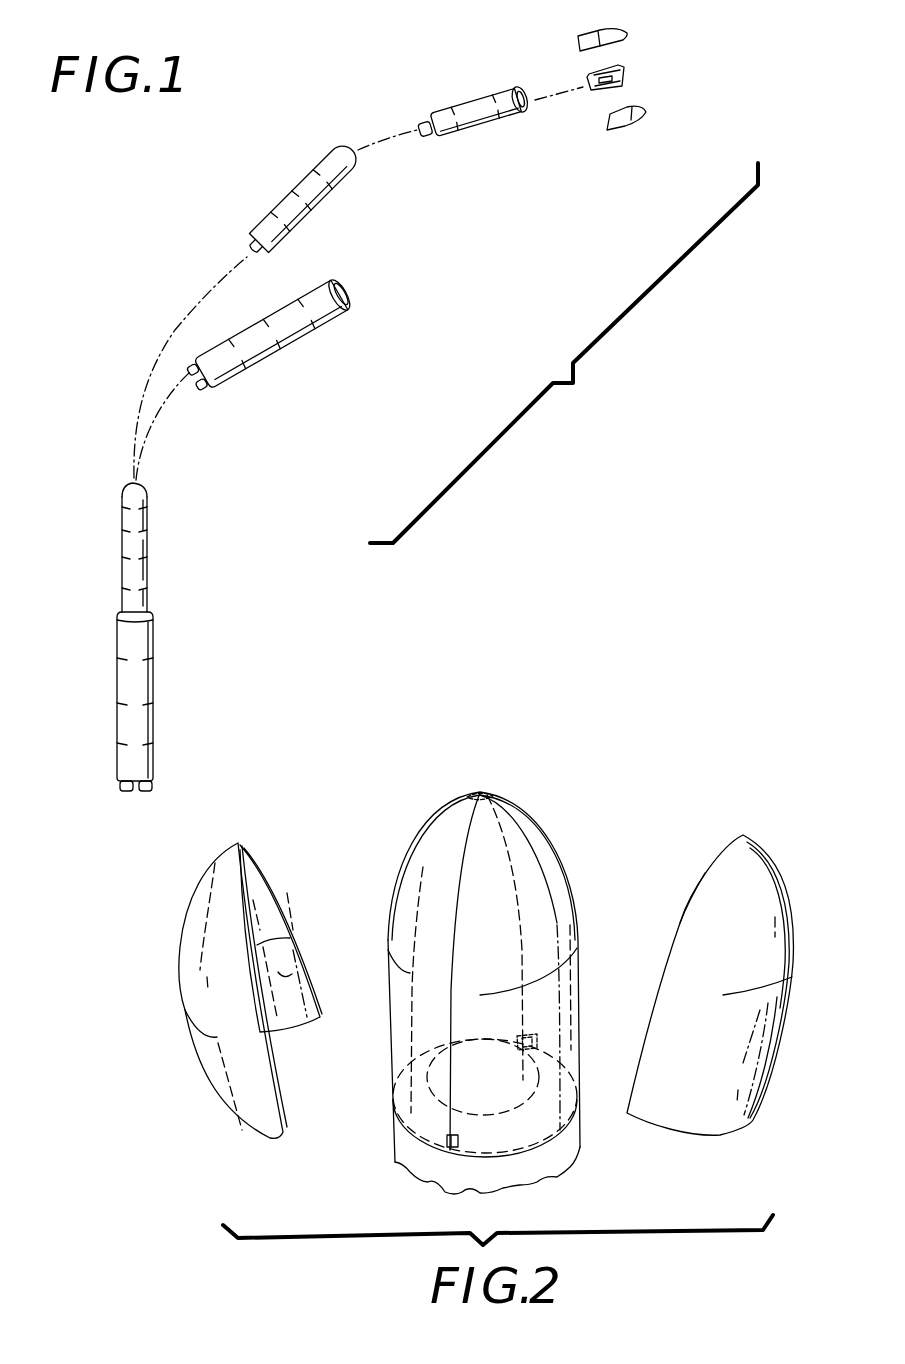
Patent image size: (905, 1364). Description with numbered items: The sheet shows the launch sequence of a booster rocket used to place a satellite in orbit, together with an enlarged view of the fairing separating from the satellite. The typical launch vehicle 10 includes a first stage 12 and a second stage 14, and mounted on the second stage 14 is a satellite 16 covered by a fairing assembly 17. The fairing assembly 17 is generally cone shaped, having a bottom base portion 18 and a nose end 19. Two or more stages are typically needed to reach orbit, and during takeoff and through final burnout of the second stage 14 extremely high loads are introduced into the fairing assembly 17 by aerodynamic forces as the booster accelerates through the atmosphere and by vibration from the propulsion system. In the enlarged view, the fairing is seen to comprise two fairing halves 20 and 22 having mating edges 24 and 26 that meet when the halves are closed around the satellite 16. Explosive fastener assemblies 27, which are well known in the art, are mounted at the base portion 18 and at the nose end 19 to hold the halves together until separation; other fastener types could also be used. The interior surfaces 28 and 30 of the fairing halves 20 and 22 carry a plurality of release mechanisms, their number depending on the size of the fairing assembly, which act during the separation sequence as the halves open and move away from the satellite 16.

In FIG. 1, the launch vehicle 10 is at (293, 521).
In FIG. 1, the first stage 12 is at (293, 340).
In FIG. 1, the second stage 14 is at (280, 200).
In FIG. 1, the satellite 16 is at (630, 72).
In FIG. 1, the fairing assembly 17 is at (347, 148).
In FIG. 2, the fairing assembly 17 is at (533, 797).
In FIG. 2, the bottom base portion 18 is at (415, 1140).
In FIG. 2, the nose end 19 is at (483, 790).
In FIG. 1, the fairing half 20 is at (627, 32).
In FIG. 2, the fairing half 20 is at (183, 910).
In FIG. 1, the fairing half 22 is at (640, 127).
In FIG. 2, the fairing half 22 is at (790, 890).
In FIG. 2, the mating edge 24 is at (277, 890).
In FIG. 2, the mating edge 26 is at (705, 873).
In FIG. 2, the explosive fastener assembly 27 is at (460, 790).
In FIG. 2, the interior surface 28 is at (280, 972).
In FIG. 2, the interior surface 30 is at (672, 937).